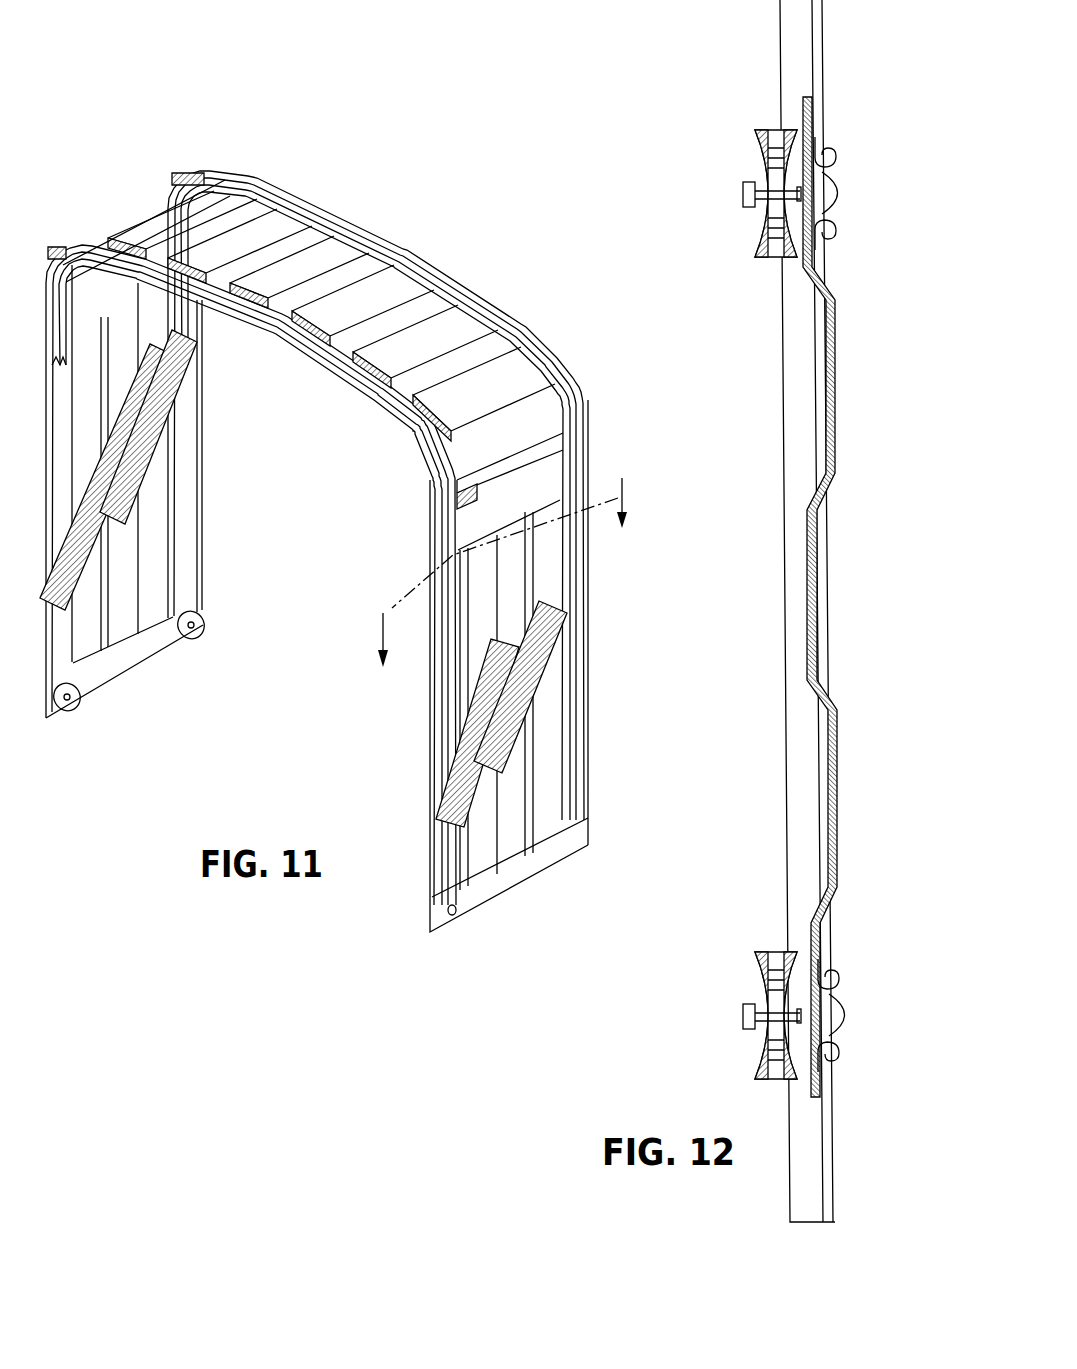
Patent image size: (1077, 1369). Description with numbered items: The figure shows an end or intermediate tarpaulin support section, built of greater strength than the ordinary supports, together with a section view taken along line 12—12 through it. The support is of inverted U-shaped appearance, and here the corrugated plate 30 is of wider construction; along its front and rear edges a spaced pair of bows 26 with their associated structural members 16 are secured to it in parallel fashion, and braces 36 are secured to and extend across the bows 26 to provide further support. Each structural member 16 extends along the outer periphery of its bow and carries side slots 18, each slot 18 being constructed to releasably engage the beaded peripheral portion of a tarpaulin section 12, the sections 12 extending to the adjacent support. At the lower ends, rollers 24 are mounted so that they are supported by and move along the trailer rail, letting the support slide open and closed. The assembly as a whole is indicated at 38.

In FIG. 11, the tarpaulin section 12 is at (503, 591).
In FIG. 11, the structural member 16 is at (447, 738).
In FIG. 12, the structural member 16 is at (815, 191).
In FIG. 12, the side slot 18 is at (836, 157).
In FIG. 12, the roller 24 is at (757, 167).
In FIG. 11, the upper tubular bow portion 26 is at (423, 278).
In FIG. 11, the corrugated plate 30 is at (185, 537).
In FIG. 12, the corrugated plate 30 is at (827, 380).
In FIG. 11, the brace 36 is at (232, 228).
In FIG. 11, the frame assembly 38 is at (428, 155).